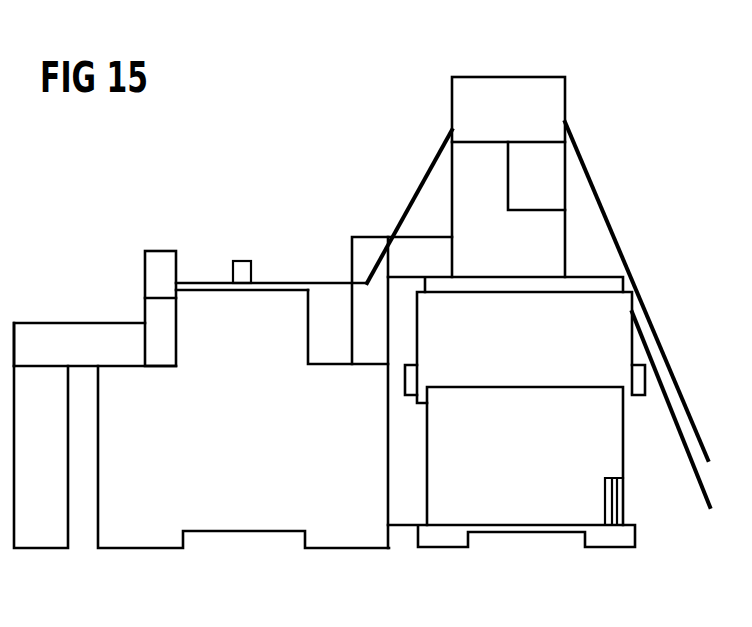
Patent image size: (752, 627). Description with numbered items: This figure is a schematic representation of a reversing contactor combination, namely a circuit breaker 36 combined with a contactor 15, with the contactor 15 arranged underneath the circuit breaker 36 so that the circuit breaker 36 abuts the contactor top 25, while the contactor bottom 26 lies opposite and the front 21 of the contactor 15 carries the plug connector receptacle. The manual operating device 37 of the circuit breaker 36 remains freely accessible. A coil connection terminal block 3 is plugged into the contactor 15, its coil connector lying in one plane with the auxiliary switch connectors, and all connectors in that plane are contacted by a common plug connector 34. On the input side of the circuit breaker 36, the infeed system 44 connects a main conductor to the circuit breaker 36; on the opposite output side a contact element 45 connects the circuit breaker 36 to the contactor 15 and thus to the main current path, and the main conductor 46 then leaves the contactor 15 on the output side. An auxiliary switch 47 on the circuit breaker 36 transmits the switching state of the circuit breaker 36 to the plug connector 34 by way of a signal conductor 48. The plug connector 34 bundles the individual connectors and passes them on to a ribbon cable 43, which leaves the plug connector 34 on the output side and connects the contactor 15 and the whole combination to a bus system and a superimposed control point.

The coil connection terminal block 3 is at (472, 195).
The contactor 15 is at (523, 493).
The front 21 is at (602, 270).
The contactor top 25 is at (389, 462).
The contactor bottom 26 is at (635, 340).
The plug connector 34 is at (505, 76).
The circuit breaker 36 is at (243, 494).
The manual operating device 37 is at (242, 260).
The ribbon cable 43 is at (607, 202).
The infeed system 44 is at (60, 322).
The contact element 45 is at (352, 322).
The main conductor 46 is at (693, 460).
The auxiliary switch 47 is at (160, 250).
The signal conductor 48 is at (287, 282).